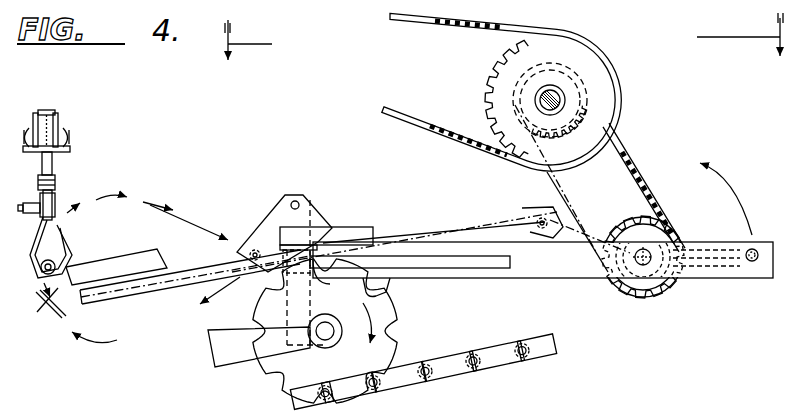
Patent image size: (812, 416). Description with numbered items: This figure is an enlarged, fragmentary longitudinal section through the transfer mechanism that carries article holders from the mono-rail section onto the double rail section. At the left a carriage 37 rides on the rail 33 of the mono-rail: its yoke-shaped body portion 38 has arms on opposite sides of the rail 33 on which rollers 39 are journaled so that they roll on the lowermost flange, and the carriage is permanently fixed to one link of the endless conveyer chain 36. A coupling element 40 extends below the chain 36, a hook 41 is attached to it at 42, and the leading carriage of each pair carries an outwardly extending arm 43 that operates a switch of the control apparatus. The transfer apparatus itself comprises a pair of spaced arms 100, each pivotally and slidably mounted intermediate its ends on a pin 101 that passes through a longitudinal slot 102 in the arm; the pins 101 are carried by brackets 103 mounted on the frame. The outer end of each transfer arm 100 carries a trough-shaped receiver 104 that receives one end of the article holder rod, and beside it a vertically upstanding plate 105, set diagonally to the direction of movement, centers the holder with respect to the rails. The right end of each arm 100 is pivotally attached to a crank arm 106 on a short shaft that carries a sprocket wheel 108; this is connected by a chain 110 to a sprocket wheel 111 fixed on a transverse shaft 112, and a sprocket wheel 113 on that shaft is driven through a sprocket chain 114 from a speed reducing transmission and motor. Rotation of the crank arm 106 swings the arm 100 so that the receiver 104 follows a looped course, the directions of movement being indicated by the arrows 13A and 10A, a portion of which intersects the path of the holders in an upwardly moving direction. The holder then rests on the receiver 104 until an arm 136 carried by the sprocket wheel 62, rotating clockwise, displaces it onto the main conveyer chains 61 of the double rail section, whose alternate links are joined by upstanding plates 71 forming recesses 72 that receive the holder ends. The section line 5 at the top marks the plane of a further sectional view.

The section line 5- 5 is at (499, 53).
The rail 33 is at (56, 112).
The endless conveyer chain 36 is at (42, 165).
The carriage 37 is at (72, 143).
The yoke-shaped body portion 38 is at (72, 150).
The rollers 39 is at (34, 114).
The coupling element 40 is at (55, 185).
The hook 41 is at (30, 286).
The attachment point of hook 42 is at (58, 212).
The outwardly extending arm 43 is at (28, 211).
The direction of swing arrows 10A is at (30, 324).
The left arm 13A is at (148, 202).
The transfer arm 100 is at (209, 257).
The pin 101 is at (305, 218).
The longitudinal slot 102 is at (460, 262).
The bracket 103 is at (325, 228).
The trough-shaped receiver 104 is at (255, 255).
The vertically upstanding plate 105 is at (375, 223).
The crank arm 106 is at (537, 215).
The sprocket wheel 108 is at (634, 221).
The chain 110 is at (632, 160).
The sprocket wheel 111 is at (581, 176).
The shaft 112 is at (560, 100).
The sprocket wheel 113 is at (486, 72).
The sprocket chain 114 is at (430, 98).
The arm 136 is at (210, 370).
The conveyer chain 61 is at (440, 369).
The sprocket wheel 62 is at (400, 318).
The upstanding plates 71 is at (507, 366).
The recesses 72 is at (433, 386).